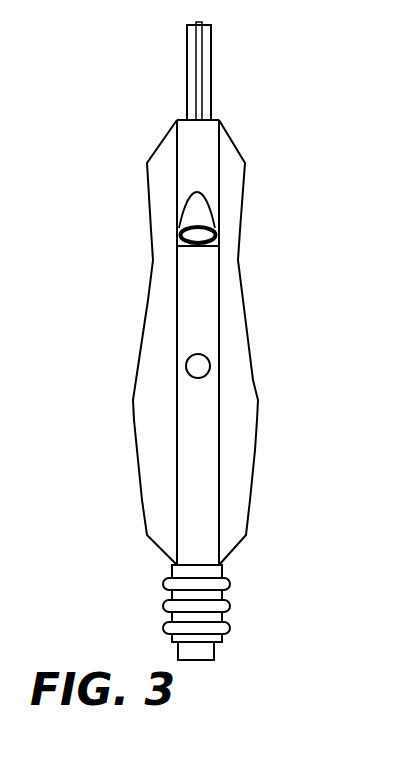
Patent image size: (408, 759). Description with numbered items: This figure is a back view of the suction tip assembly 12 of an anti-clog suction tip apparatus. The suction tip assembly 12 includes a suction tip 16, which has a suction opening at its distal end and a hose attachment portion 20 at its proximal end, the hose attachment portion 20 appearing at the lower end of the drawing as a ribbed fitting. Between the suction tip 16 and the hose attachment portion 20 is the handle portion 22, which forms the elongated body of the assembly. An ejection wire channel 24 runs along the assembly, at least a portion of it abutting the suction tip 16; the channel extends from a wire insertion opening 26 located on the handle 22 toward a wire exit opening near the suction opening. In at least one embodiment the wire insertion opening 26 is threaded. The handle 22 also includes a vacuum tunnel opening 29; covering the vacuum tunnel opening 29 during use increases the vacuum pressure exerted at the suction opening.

The suction tip assembly 12 is at (71, 18).
The suction tip 16 is at (212, 82).
The ejection wire channel 24 is at (200, 46).
The handle portion 22 is at (160, 407).
The wire insertion opening 26 is at (216, 235).
The vacuum tunnel opening 29 is at (196, 364).
The hose attachment portion 20 is at (195, 627).